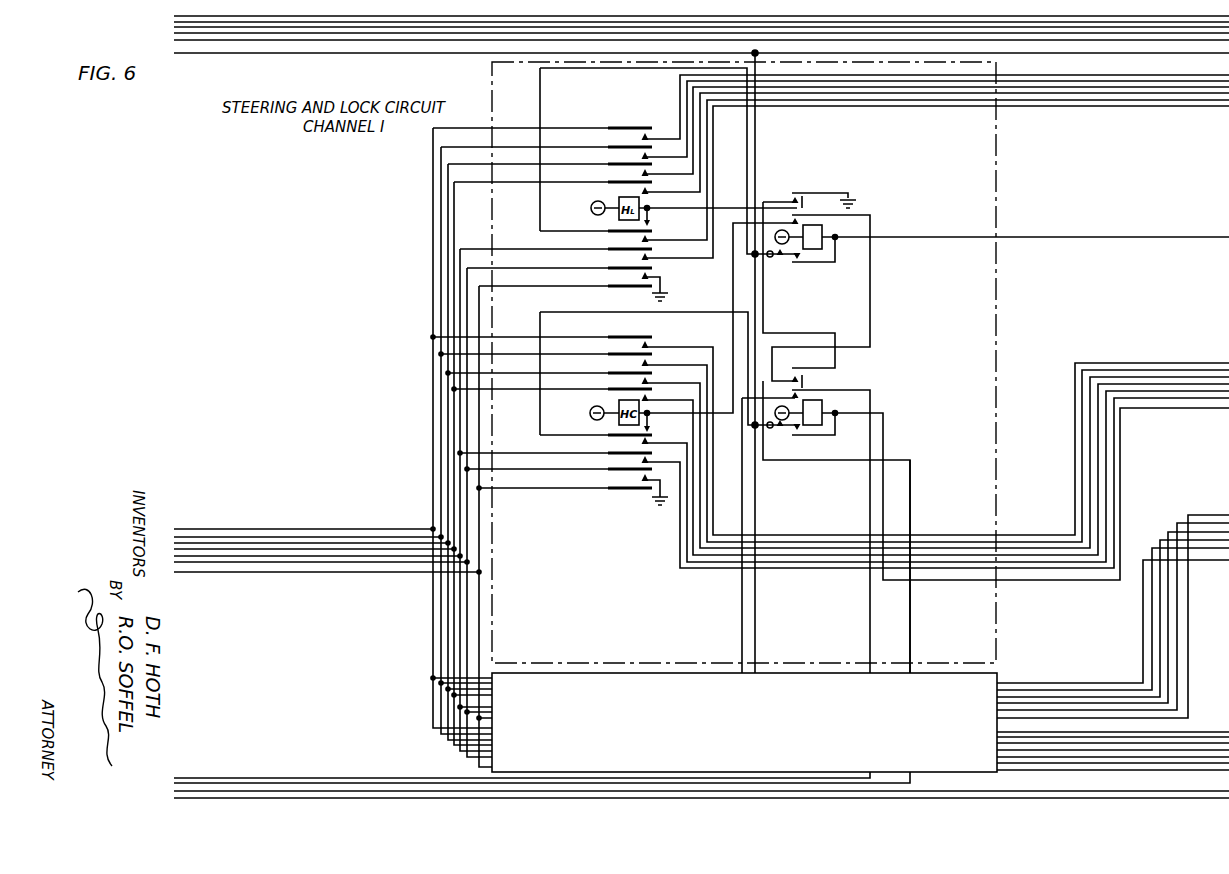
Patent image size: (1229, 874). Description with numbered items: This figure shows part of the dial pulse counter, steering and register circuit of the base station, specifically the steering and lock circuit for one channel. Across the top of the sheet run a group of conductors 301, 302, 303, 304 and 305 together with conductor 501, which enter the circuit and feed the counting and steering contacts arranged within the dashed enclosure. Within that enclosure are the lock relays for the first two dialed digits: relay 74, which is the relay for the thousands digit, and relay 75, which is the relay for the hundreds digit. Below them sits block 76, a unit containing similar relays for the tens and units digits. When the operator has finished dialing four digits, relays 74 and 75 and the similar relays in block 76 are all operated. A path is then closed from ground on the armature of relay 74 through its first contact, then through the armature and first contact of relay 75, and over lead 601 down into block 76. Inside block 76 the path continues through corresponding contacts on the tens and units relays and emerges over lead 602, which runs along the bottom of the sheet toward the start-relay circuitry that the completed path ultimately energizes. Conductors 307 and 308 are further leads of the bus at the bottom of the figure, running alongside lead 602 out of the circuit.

The conductor 301 is at (1011, 17).
The conductor 302 is at (1049, 23).
The conductor 303 is at (1086, 28).
The conductor 304 is at (1122, 34).
The conductor 305 is at (1157, 41).
The conductor 501 is at (1196, 54).
The relay 74 is at (824, 236).
The relay 75 is at (824, 414).
The block 76 is at (744, 722).
The lead 601 is at (910, 625).
The lead 602 is at (912, 783).
The conductor 307 is at (1120, 791).
The conductor 308 is at (1163, 798).